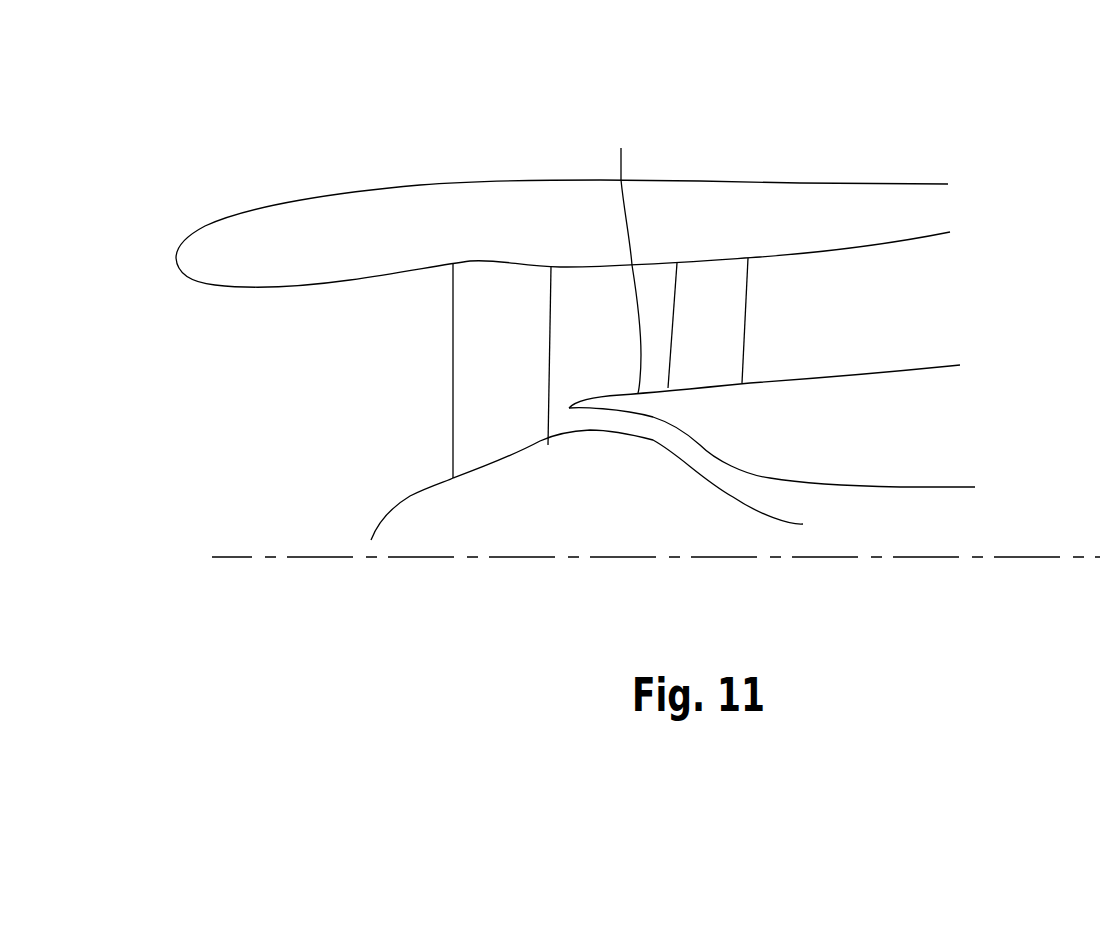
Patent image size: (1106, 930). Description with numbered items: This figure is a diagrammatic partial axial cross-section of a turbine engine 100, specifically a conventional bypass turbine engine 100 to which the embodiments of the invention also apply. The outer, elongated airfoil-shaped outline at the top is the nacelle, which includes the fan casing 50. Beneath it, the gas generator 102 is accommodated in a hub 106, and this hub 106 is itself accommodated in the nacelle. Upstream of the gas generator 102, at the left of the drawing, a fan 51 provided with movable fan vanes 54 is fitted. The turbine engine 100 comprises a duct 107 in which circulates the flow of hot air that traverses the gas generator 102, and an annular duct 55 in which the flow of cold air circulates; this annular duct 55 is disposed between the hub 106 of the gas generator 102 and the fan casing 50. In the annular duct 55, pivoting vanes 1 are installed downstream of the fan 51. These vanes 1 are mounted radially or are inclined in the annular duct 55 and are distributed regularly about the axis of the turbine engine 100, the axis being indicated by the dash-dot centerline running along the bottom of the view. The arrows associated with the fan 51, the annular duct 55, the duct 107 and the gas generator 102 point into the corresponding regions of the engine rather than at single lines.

The turbine engine 100 is at (870, 137).
The fan casing 50 is at (565, 232).
The hub 106 is at (624, 254).
The pivoting vanes 1 is at (718, 295).
The movable fan vanes 54 is at (507, 296).
The annular duct 55 is at (900, 316).
The duct 107 is at (570, 422).
The gas generator 102 is at (945, 447).
The fan 51 is at (368, 508).